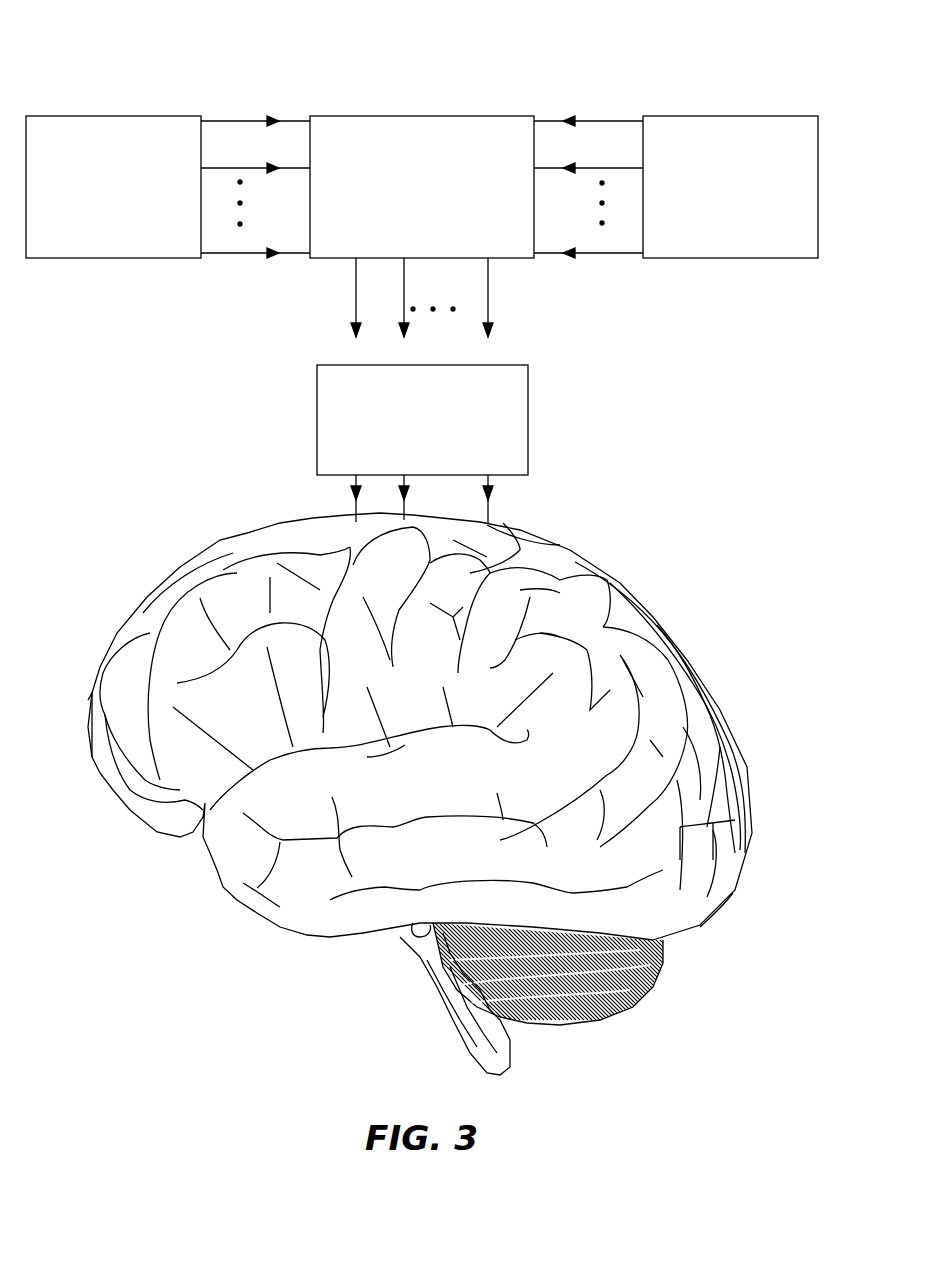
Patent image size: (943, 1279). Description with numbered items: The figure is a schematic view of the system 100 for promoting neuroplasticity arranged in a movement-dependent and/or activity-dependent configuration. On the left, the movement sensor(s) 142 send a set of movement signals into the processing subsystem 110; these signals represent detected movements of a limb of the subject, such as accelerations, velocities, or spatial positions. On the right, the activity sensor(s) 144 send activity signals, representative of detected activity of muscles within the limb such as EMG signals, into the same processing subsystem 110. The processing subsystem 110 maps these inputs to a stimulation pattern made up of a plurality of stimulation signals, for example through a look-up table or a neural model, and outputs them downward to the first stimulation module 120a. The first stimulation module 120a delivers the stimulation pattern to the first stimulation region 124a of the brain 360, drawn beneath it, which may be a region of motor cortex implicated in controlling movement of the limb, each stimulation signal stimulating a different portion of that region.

The system 100 is at (165, 90).
The movement sensors 142 is at (185, 211).
The processing subsystem 110 is at (437, 222).
The activity sensors 144 is at (802, 212).
The first stimulation module 120a is at (488, 444).
The first stimulation region 124a is at (342, 541).
The brain 360 is at (298, 935).